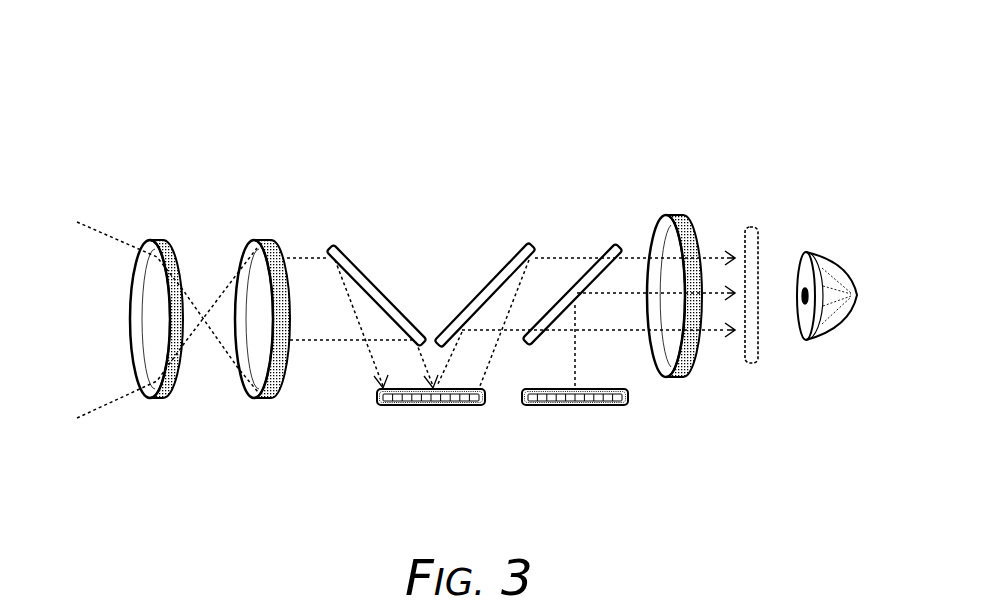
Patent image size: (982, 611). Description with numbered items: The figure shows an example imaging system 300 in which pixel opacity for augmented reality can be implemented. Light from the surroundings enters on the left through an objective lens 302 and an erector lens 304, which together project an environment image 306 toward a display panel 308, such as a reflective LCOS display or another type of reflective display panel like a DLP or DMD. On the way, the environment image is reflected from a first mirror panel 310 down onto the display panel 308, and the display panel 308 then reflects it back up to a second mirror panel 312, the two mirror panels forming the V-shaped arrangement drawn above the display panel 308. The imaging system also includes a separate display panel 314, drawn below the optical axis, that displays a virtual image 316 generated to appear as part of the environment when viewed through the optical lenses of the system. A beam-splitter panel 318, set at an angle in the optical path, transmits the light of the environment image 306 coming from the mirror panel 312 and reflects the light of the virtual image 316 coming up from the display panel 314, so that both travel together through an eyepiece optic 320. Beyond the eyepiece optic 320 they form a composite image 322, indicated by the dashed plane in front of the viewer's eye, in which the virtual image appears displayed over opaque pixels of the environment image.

The imaging system 300 is at (738, 72).
The objective lens 302 is at (158, 241).
The erector lens 304 is at (262, 241).
The environment image 306 is at (380, 384).
The display panel 308 is at (427, 405).
The mirror panel 310 is at (330, 243).
The mirror panel 312 is at (494, 276).
The display panel 314 is at (570, 405).
The virtual image 316 is at (634, 365).
The beam-splitter panel 318 is at (608, 245).
The eyepiece optic 320 is at (676, 216).
The composite image 322 is at (757, 245).